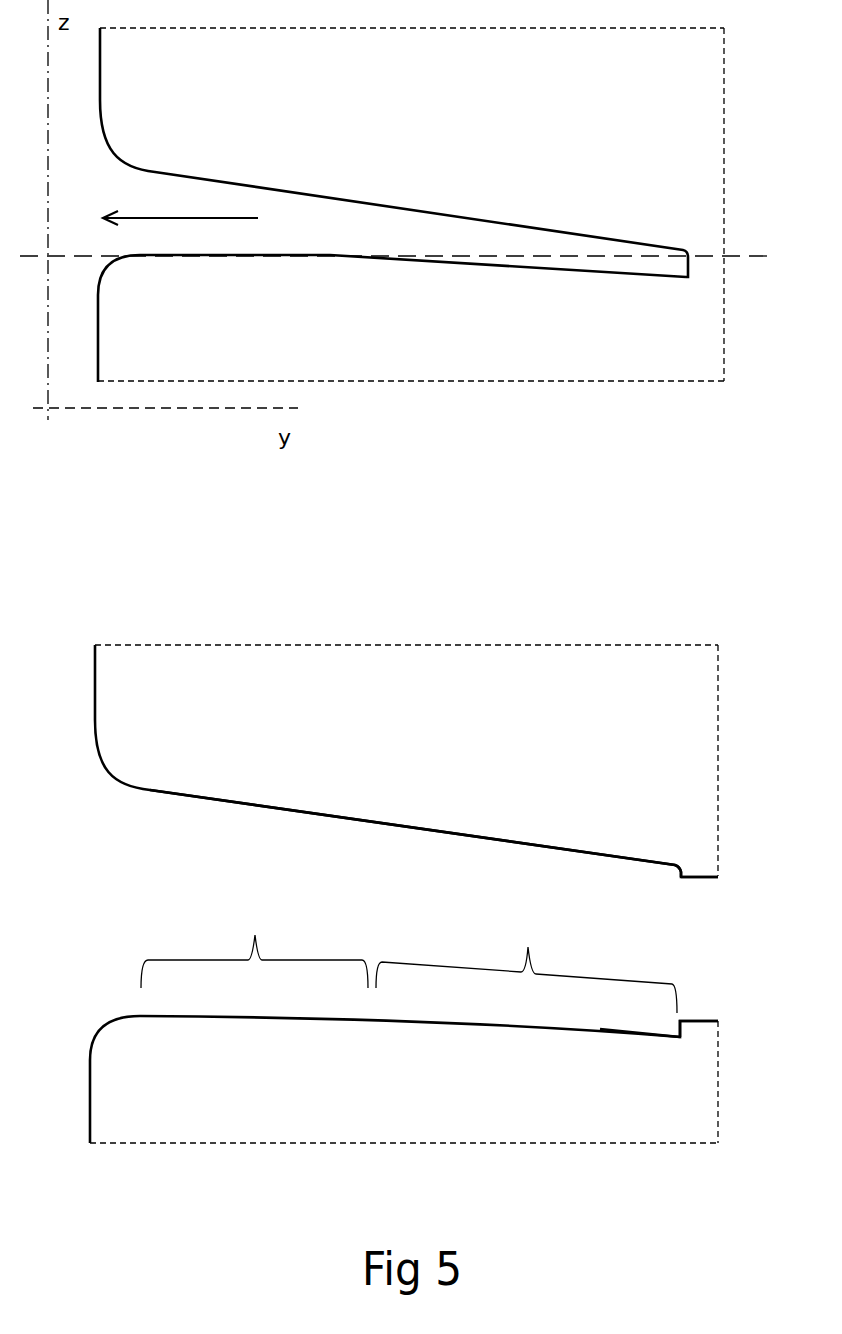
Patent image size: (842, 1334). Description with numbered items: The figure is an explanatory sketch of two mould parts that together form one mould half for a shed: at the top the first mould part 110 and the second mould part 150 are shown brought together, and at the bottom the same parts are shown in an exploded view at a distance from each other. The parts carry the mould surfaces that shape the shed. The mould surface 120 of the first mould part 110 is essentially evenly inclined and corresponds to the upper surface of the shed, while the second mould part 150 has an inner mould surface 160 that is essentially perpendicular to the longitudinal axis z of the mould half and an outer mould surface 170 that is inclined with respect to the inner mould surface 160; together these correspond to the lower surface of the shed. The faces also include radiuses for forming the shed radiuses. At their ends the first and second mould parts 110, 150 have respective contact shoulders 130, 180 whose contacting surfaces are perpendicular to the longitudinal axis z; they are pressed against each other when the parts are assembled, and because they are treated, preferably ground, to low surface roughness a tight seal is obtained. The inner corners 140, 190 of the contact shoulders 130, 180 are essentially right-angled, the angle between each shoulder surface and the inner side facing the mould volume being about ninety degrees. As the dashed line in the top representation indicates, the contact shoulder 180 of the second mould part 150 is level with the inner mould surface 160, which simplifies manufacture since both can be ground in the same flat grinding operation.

The first mould part 110 is at (409, 452).
The mould surface 120 is at (432, 831).
The contact shoulder 130 is at (690, 878).
The inner corner 140 is at (672, 879).
The second mould part 150 is at (407, 699).
The inner mould surface 160 is at (254, 945).
The outer mould surface 170 is at (526, 965).
The contact shoulder 180 is at (698, 1019).
The inner corner 190 is at (669, 1027).